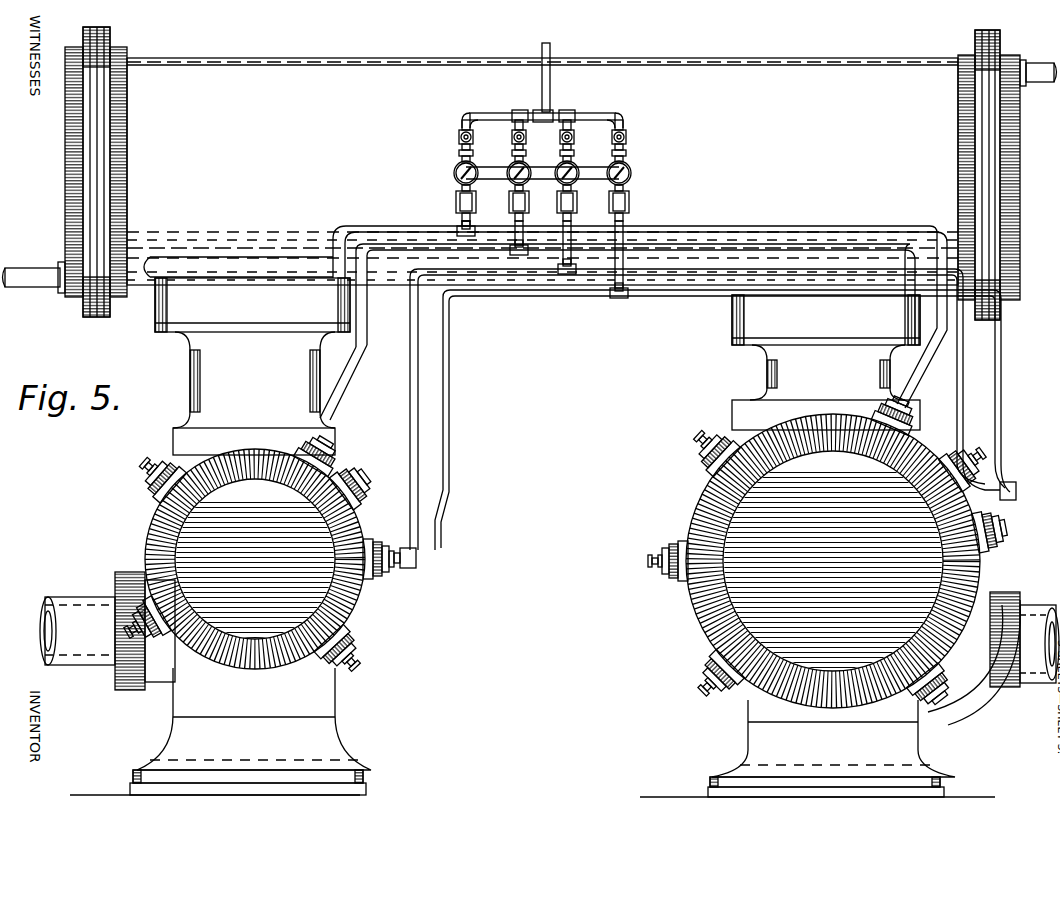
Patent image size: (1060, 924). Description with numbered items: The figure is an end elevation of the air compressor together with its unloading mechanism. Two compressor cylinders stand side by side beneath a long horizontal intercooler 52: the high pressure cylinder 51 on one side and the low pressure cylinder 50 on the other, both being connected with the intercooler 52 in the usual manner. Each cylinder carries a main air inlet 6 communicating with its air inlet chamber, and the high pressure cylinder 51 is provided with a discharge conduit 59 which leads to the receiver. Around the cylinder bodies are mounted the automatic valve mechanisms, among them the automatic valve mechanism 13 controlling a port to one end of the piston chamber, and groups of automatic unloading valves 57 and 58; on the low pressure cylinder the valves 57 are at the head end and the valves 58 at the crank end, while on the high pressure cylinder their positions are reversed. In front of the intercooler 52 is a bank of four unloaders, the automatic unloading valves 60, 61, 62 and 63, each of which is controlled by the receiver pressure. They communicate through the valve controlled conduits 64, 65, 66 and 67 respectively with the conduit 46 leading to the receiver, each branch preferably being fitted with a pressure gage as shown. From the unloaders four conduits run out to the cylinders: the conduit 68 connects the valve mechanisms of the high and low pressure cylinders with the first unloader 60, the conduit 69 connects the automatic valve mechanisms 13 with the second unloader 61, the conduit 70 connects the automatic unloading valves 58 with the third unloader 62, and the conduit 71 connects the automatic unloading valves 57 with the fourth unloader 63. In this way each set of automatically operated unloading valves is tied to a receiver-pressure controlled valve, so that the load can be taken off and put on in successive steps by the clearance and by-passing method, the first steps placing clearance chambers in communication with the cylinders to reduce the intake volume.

The main air inlet 6 is at (1045, 682).
The automatic valve mechanism 13 is at (878, 415).
The conduit 46 is at (549, 98).
The low pressure cylinder 50 is at (821, 546).
The high pressure cylinder 51 is at (246, 526).
The intercooler 52 is at (530, 173).
The automatic unloading valves 57 is at (972, 515).
The automatic unloading valves 58 is at (412, 572).
The discharge conduit 59 is at (107, 631).
The automatic unloading valve 60 is at (452, 210).
The automatic unloading valve 61 is at (506, 220).
The automatic unloading valve 62 is at (554, 229).
The automatic unloading valve 63 is at (605, 241).
The valve controlled conduit 64 is at (450, 141).
The valve controlled conduit 65 is at (504, 141).
The valve controlled conduit 66 is at (553, 141).
The valve controlled conduit 67 is at (604, 141).
The conduit 68 is at (300, 306).
The conduit 69 is at (695, 245).
The conduit 70 is at (410, 405).
The conduit 71 is at (702, 296).